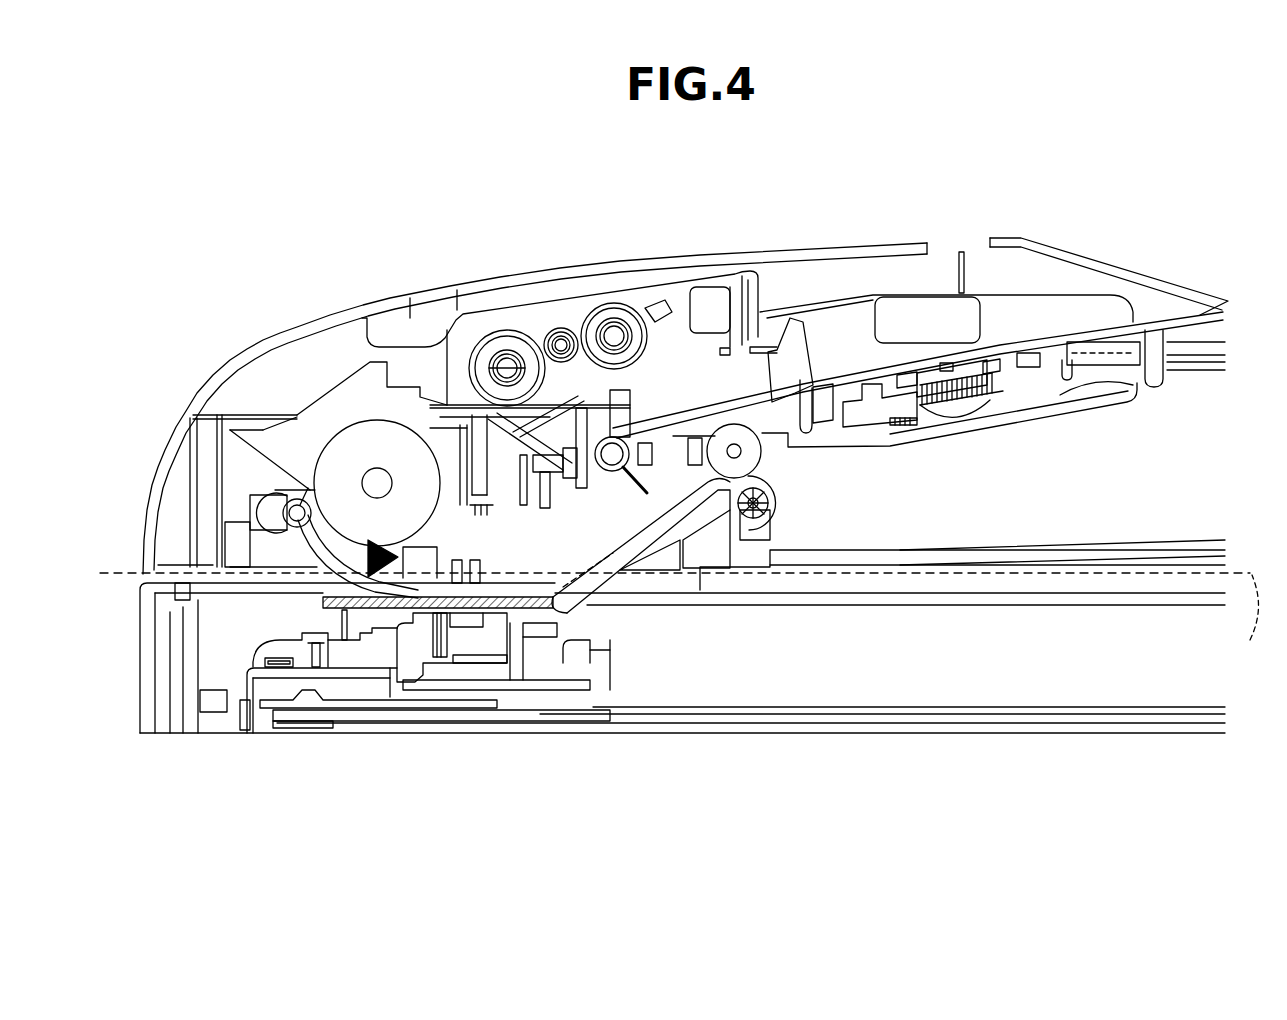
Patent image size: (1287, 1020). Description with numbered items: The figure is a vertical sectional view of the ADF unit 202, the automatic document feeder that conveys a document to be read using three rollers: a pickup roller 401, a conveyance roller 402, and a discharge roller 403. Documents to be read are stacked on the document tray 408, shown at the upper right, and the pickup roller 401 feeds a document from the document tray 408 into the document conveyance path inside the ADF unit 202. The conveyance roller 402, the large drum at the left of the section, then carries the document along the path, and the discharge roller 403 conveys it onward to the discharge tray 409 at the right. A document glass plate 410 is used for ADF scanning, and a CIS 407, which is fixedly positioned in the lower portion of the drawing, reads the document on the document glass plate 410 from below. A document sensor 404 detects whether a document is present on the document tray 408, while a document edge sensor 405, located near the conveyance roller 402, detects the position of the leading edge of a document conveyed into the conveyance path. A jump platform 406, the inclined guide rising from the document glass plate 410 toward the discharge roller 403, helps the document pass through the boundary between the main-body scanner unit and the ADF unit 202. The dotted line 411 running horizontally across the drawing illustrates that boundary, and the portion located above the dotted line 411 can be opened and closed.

The ADF unit 202 is at (808, 190).
The pickup roller 401 is at (594, 297).
The conveyance roller 402 is at (289, 477).
The discharge roller 403 is at (754, 460).
The document sensor 404 is at (620, 415).
The document edge sensor 405 is at (424, 567).
The jump platform 406 is at (607, 575).
The CIS 407 is at (467, 642).
The document tray 408 is at (1003, 352).
The discharge tray 409 is at (1013, 535).
The document glass plate 410 is at (321, 600).
The dotted line 411 is at (1247, 622).